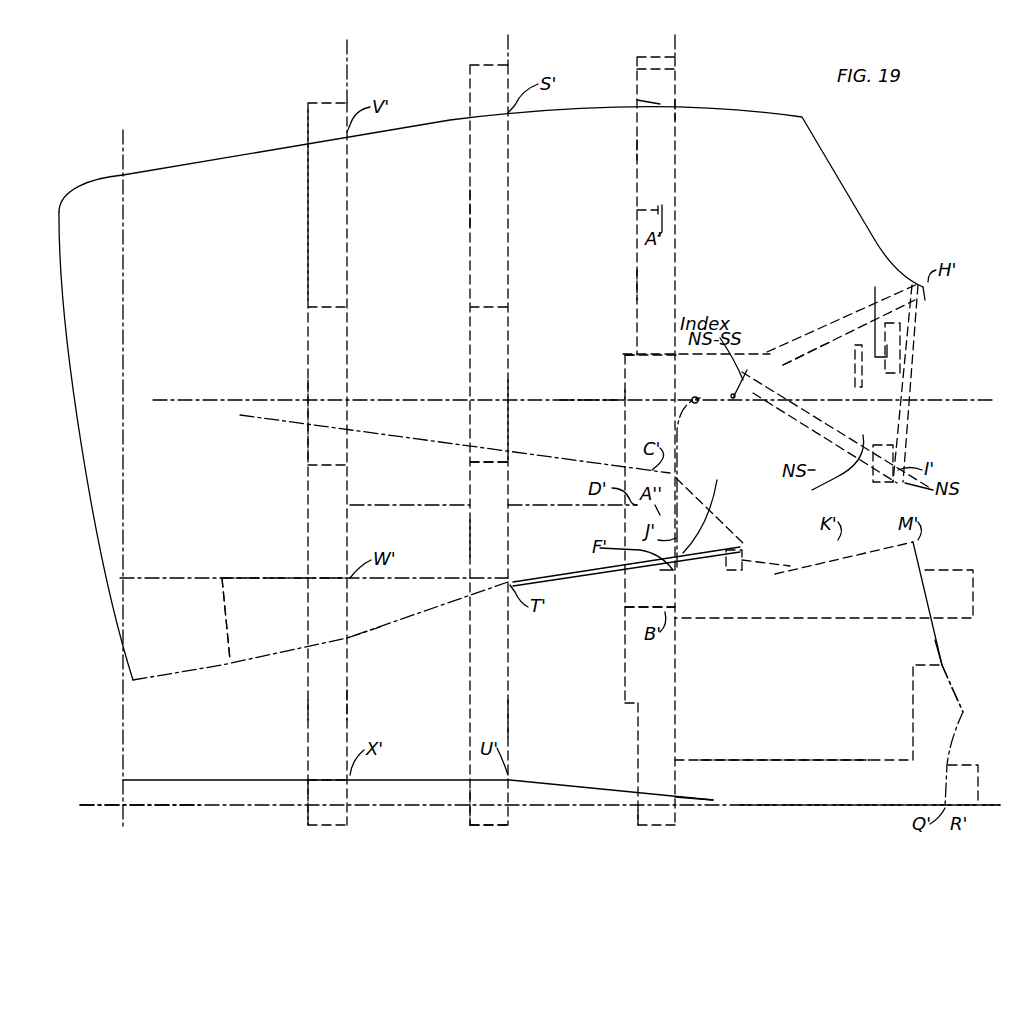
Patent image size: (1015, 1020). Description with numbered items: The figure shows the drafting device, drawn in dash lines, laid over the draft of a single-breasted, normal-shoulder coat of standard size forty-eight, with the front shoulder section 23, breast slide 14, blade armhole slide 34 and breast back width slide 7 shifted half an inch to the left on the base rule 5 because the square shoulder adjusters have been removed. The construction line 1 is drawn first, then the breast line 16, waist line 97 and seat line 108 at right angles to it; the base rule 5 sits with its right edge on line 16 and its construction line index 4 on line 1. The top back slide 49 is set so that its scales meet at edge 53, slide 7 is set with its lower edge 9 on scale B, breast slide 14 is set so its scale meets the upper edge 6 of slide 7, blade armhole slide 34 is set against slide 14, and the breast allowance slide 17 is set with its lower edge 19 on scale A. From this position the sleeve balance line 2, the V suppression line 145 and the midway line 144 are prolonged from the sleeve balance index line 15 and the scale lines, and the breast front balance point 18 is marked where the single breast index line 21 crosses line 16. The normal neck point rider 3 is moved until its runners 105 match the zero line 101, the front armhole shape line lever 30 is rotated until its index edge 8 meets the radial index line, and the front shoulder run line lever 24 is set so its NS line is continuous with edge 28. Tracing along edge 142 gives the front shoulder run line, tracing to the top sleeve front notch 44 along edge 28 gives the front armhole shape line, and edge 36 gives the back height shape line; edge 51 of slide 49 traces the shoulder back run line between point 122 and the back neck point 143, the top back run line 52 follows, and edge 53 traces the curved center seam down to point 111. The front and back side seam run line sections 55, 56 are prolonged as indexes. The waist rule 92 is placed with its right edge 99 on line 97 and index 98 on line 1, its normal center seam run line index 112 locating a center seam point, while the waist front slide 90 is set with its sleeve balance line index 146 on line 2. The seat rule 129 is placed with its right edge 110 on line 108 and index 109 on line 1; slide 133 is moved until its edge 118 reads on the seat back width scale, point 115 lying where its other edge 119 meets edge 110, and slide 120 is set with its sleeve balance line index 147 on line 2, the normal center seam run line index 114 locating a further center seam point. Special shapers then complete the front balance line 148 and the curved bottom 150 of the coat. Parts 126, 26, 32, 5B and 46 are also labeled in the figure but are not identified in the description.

The front balance line 148 is at (218, 168).
The bottom of the coat 150 is at (92, 562).
The seat line 108 is at (347, 50).
The slide 120 is at (330, 266).
The sleeve balance line index 147 is at (330, 400).
The midway line 144 is at (340, 480).
The normal center seam run line index 114 is at (340, 760).
The index 109 is at (312, 808).
The seat rule 129 is at (332, 705).
The right edge of seat rule 110 is at (350, 708).
The waist line 97 is at (510, 50).
The frame connection 126 is at (495, 465).
The waist front slide 90 is at (486, 212).
The sleeve balance line index 146 is at (490, 400).
The waist rule 92 is at (490, 530).
The right edge of waist rule 99 is at (510, 733).
The index 98 is at (480, 812).
The normal center seam run line index 112 is at (493, 785).
The breast line 16 is at (678, 42).
The single breast index line 21 is at (660, 107).
The breast front balance point 18 is at (676, 112).
The breast allowance slide 17 is at (658, 143).
The lower edge of breast allowance slide 19 is at (636, 212).
The base rule 5 is at (655, 288).
The breast slide 14 is at (640, 370).
The sleeve balance index line 15 is at (660, 372).
The lower edge of breast back width slide 9 is at (645, 612).
The sleeve balance line 2 is at (597, 376).
The construction line index 4 is at (645, 812).
The point 111 is at (678, 805).
The V suppression line 145 is at (422, 430).
The edge of slide 133 118 is at (315, 583).
The slide 133 is at (285, 613).
The edge of slide 133 119 is at (270, 660).
The point 115 is at (352, 640).
The edge of top back slide 53 is at (192, 777).
The construction line 1 is at (203, 808).
The front side seam run line section 55 is at (720, 545).
The back side seam run line section 56 is at (718, 572).
The upper edge of breast back width slide 6 is at (653, 572).
The blade armhole slide 34 is at (708, 485).
The edge 36 is at (680, 432).
The top sleeve front notch 44 is at (692, 402).
The index edge 8 is at (730, 393).
The front armhole shape line lever 30 is at (795, 400).
The inclined bar 26 is at (806, 338).
The normal neck point rider 3 is at (800, 356).
The zero (normal) line 101 is at (873, 305).
The runners 105 is at (860, 332).
The front shoulder section 23 is at (882, 380).
The edge of front shoulder section 142 is at (920, 375).
The front shoulder run line lever 24 is at (905, 427).
The edge 28 is at (806, 430).
The arm 32 is at (845, 468).
The breast back width slide 7 is at (938, 595).
The link 5B is at (742, 555).
The top back slide 49 is at (928, 715).
The lower member 46 is at (808, 778).
The point 122 is at (945, 662).
The edge of top back slide 51 is at (948, 688).
The back neck point 143 is at (962, 712).
The top back run line 52 is at (950, 758).